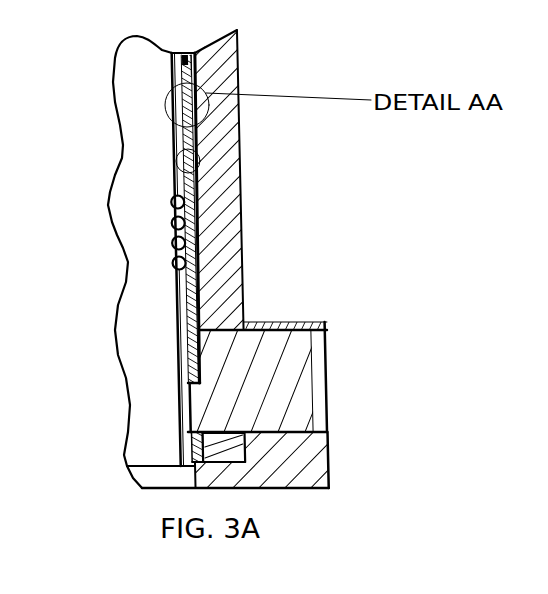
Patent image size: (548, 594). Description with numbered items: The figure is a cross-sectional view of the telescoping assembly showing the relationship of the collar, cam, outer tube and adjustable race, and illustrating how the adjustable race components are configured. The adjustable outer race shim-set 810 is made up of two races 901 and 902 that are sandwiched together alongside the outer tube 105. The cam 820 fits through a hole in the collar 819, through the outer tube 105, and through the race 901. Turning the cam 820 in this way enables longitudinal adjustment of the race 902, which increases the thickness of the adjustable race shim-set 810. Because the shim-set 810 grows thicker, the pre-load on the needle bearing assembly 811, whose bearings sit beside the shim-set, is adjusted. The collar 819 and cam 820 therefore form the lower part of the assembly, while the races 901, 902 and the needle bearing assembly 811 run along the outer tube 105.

The race 902 is at (181, 63).
The race 901 is at (193, 68).
The adjustable outer race shim-set 810 is at (200, 161).
The outer tube 105 is at (218, 237).
The needle bearing assembly 811 is at (179, 243).
The cam 820 is at (292, 388).
The collar 819 is at (297, 462).